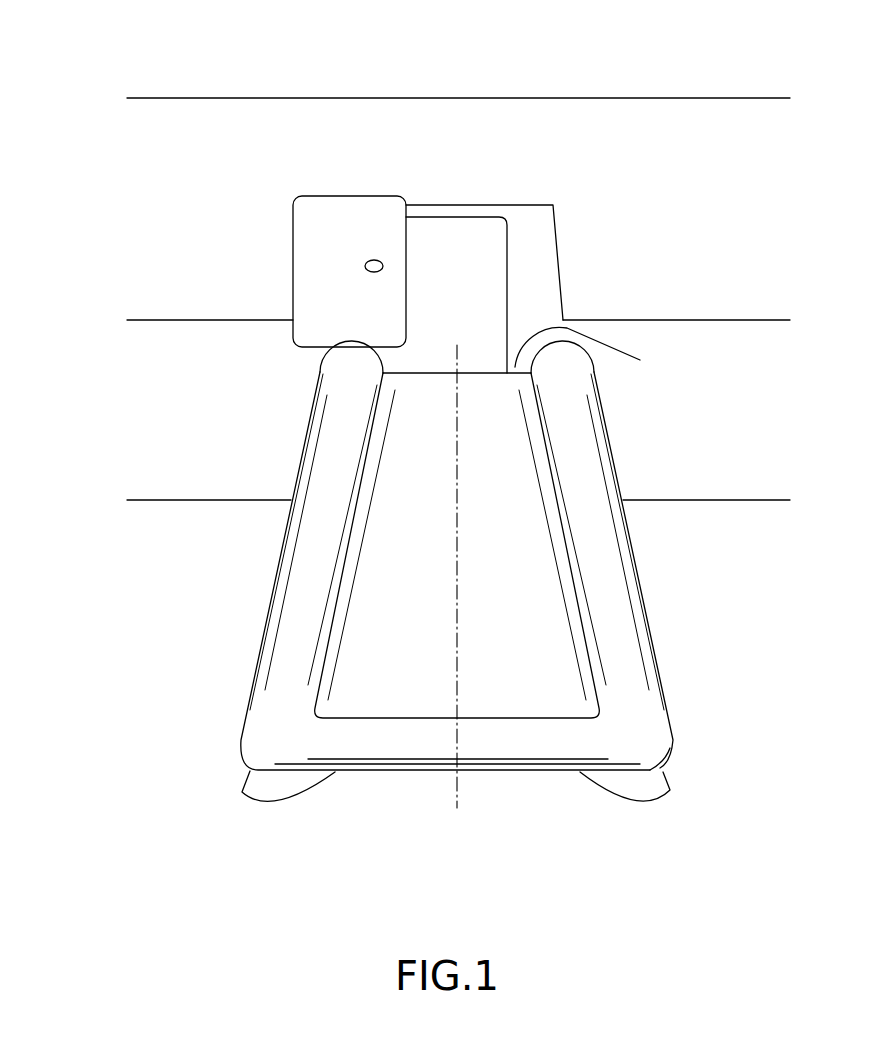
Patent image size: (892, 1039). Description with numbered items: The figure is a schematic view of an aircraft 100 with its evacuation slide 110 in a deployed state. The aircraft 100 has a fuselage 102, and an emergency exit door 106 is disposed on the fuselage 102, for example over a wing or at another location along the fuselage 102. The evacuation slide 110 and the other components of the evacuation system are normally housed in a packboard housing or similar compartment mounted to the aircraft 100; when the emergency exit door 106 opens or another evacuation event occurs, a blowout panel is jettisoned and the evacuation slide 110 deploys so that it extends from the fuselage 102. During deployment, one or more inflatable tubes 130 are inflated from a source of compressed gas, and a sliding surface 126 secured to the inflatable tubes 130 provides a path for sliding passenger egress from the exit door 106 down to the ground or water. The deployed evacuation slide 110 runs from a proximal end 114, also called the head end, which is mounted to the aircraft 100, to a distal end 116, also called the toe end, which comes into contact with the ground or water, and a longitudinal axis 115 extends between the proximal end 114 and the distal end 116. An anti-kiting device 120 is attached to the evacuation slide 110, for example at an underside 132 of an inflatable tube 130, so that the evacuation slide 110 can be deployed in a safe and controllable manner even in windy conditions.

The aircraft 100 is at (160, 76).
The fuselage 102 is at (644, 203).
The emergency exit door 106 is at (305, 248).
The evacuation slide 110 is at (200, 623).
The proximal end 114 is at (600, 353).
The longitudinal axis 115 is at (458, 788).
The distal end 116 is at (527, 770).
The anti-kiting device 120 is at (248, 787).
The sliding surface 126 is at (507, 477).
The inflatable tubes 130 is at (318, 398).
The underside 132 is at (677, 745).